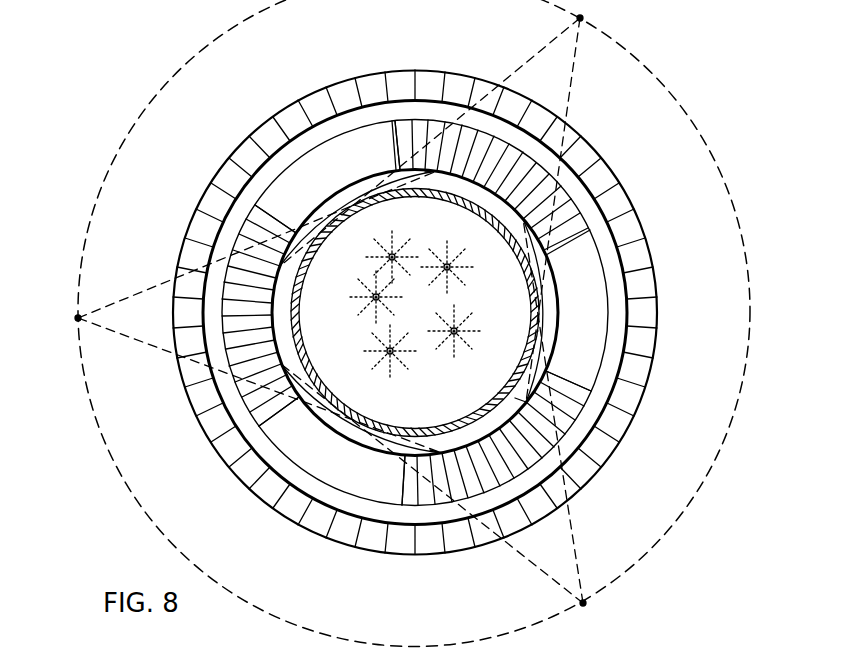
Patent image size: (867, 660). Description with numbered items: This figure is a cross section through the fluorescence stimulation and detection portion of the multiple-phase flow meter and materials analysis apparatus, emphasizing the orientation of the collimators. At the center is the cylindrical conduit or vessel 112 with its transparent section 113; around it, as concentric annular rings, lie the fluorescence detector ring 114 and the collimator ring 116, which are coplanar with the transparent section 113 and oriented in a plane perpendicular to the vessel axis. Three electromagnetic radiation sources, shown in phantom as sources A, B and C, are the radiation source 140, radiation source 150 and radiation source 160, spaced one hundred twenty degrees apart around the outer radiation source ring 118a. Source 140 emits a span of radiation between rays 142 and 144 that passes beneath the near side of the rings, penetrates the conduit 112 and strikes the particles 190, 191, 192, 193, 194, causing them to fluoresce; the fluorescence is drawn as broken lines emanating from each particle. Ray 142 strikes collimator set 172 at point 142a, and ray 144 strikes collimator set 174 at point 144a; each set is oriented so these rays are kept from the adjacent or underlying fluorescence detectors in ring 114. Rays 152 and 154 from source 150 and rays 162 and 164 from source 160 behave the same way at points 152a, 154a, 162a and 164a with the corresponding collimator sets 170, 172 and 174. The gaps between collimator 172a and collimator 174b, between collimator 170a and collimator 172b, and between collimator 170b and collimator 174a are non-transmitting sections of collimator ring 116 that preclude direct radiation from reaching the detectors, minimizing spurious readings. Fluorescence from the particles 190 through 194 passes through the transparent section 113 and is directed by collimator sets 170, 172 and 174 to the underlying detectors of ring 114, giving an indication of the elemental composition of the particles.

The cylindrical conduit or vessel 112 is at (510, 240).
The transparent section 113 is at (305, 358).
The fluorescence detector ring 114 is at (606, 270).
The collimator ring 116 is at (630, 298).
The radiation source ring 118a is at (692, 118).
The radiation source 140 is at (583, 18).
The ray 142 is at (533, 53).
The point of impingement on collimator set 142a is at (303, 268).
The ray 144 is at (568, 95).
The point of impingement on collimator set 144a is at (478, 396).
The radiation source 150 is at (78, 320).
The ray 152 is at (178, 279).
The point of impingement on collimator set 152a is at (452, 196).
The ray 154 is at (165, 352).
The point of impingement on collimator set 154a is at (455, 382).
The radiation source 160 is at (586, 605).
The ray 162 is at (574, 526).
The point of impingement on collimator set 162a is at (450, 268).
The ray 164 is at (538, 572).
The point of impingement on collimator set 164a is at (372, 312).
The collimator set 170 is at (550, 150).
The collimator 170a is at (393, 126).
The collimator 170b is at (590, 226).
The collimator set 172 is at (232, 332).
The collimator 172a is at (260, 430).
The collimator 172b is at (268, 210).
The collimator set 174 is at (492, 540).
The collimator 174a is at (590, 398).
The collimator 174b is at (396, 505).
The particle 190 is at (390, 254).
The particle 191 is at (448, 270).
The particle 192 is at (454, 333).
The particle 193 is at (390, 354).
The particle 194 is at (418, 292).